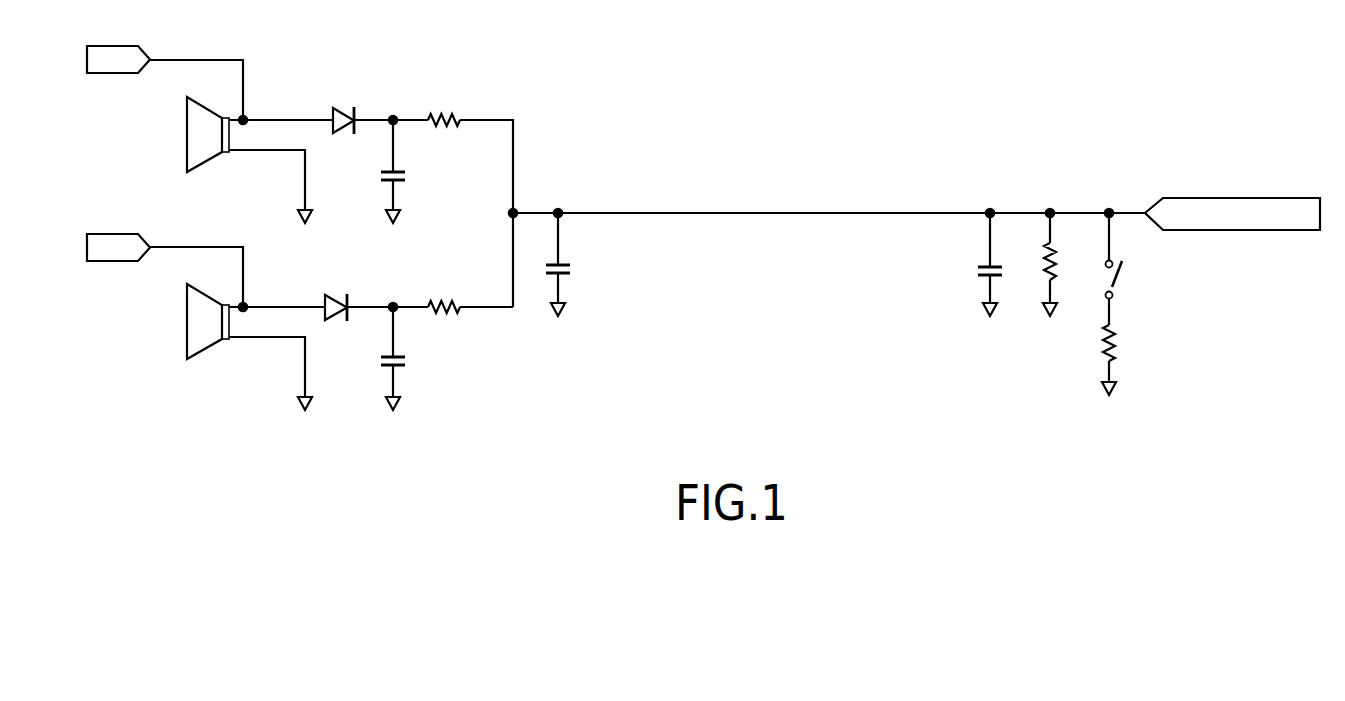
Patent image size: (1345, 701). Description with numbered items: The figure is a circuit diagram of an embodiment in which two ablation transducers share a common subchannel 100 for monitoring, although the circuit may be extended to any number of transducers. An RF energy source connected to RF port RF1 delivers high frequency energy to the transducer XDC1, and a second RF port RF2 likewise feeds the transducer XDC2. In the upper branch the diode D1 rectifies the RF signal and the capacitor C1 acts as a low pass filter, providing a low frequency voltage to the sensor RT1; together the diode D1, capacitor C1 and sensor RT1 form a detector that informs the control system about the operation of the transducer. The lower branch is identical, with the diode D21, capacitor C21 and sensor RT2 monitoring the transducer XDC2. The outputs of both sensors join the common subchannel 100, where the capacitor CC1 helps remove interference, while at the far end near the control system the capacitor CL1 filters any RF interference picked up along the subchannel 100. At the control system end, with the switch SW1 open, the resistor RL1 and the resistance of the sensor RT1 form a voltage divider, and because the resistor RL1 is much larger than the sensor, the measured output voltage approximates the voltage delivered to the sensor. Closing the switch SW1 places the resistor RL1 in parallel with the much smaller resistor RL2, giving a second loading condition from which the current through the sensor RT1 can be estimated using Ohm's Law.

The common subchannel 100 is at (766, 199).
The RF port RF1 is at (165, 83).
The RF port RF2 is at (165, 270).
The transducer XDC1 is at (260, 160).
The transducer XDC2 is at (256, 347).
The diode D1 is at (380, 109).
The diode D21 is at (376, 298).
The capacitor C1 is at (403, 169).
The capacitor C21 is at (408, 356).
The sensor RT1 is at (470, 196).
The sensor RT2 is at (470, 293).
The capacitor CC1 is at (573, 262).
The capacitor CL1 is at (1004, 262).
The resistor RL1 is at (1070, 262).
The resistor RL2 is at (1129, 360).
The switch SW1 is at (1138, 267).